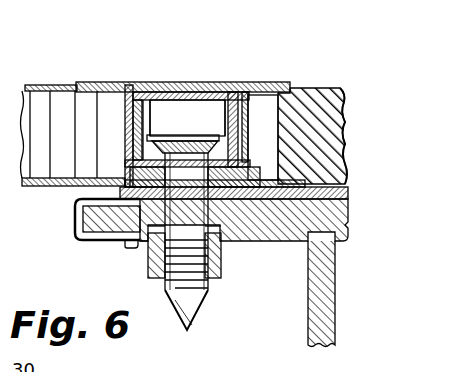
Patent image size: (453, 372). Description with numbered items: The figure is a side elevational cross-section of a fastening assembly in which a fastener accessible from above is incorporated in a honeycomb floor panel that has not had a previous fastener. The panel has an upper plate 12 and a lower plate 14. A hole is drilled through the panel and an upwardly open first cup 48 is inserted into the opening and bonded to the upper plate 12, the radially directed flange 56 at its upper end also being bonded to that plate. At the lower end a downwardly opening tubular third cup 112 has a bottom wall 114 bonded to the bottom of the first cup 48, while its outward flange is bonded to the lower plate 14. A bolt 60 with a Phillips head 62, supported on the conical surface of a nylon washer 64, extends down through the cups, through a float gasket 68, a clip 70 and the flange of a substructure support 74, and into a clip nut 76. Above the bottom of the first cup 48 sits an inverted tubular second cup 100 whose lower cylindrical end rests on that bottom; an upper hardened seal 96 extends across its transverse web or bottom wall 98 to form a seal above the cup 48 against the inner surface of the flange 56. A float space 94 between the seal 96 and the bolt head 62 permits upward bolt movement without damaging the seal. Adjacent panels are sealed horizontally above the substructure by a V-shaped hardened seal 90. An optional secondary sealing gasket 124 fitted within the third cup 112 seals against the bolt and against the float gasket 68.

The upper plate 12 is at (38, 82).
The lower plate 14 is at (38, 186).
The first tubular cup 48 is at (284, 84).
The radially directed flange 56 is at (78, 82).
The bolt 60 is at (205, 305).
The Phillips head 62 is at (191, 121).
The nylon washer 64 is at (150, 105).
The float gasket 68 is at (346, 199).
The clip 70 is at (75, 240).
The substructure support 74 is at (338, 292).
The clip nut 76 is at (217, 283).
The V-shaped hardened seal 90 is at (338, 108).
The float space 94 is at (232, 90).
The upper hardened seal 96 is at (135, 88).
The bottom wall 98 is at (177, 135).
The inverted second cup 100 is at (202, 108).
The third cup 112 is at (285, 241).
The bottom wall 114 is at (140, 218).
The secondary sealing gasket 124 is at (258, 241).